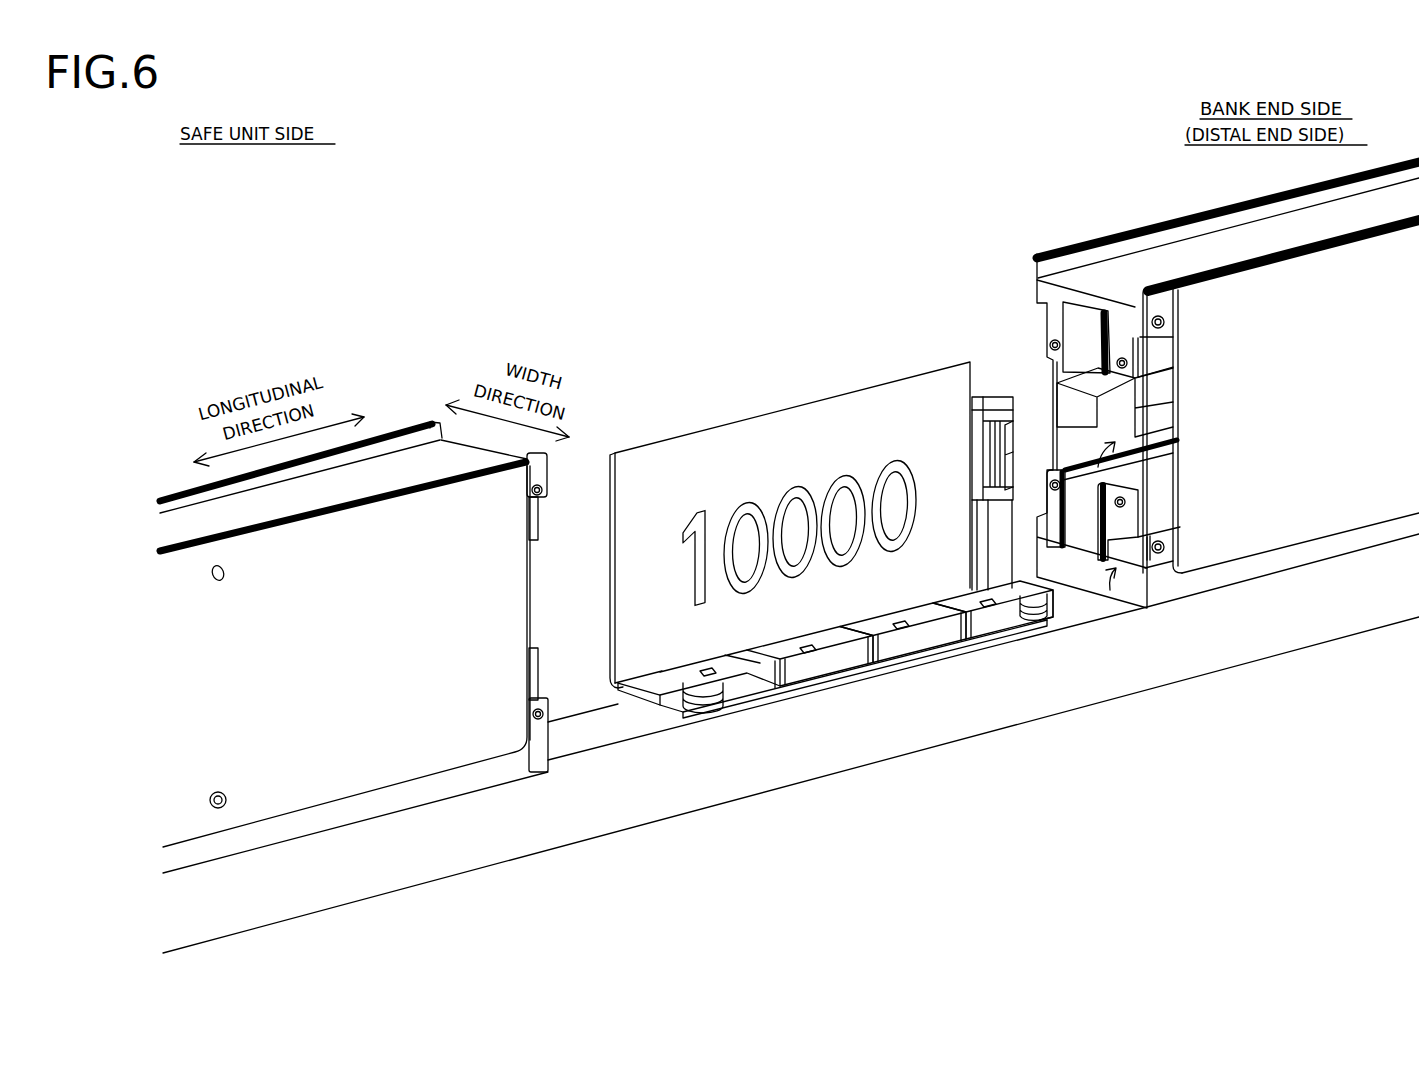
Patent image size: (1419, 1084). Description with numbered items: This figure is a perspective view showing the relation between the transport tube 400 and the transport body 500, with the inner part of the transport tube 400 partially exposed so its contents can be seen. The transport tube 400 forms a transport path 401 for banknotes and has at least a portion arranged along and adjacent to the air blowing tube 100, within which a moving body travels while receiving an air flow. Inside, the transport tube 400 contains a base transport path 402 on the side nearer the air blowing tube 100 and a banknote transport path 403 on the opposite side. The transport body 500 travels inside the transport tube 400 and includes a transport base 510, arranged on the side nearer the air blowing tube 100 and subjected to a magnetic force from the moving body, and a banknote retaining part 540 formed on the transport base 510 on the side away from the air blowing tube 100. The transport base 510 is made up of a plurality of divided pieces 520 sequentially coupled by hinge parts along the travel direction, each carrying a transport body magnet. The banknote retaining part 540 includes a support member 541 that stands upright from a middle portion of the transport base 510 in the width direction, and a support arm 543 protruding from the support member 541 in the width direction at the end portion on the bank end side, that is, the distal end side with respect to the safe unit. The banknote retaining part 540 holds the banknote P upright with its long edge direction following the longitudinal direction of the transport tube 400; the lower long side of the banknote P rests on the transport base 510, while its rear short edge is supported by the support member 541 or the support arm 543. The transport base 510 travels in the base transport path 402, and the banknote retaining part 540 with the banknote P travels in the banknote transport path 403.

The air blowing tube 100 is at (412, 869).
The transport tube 400 is at (340, 776).
The transport path 401 is at (1228, 385).
The base transport path 402 is at (1258, 455).
The banknote transport path 403 is at (1138, 472).
The transport body 500 is at (773, 240).
The transport base 510 is at (652, 708).
The divided pieces 520 is at (812, 677).
The banknote retaining part 540 is at (880, 333).
The support member 541 is at (990, 396).
The support arm 543 is at (1013, 493).
The banknote P is at (768, 409).